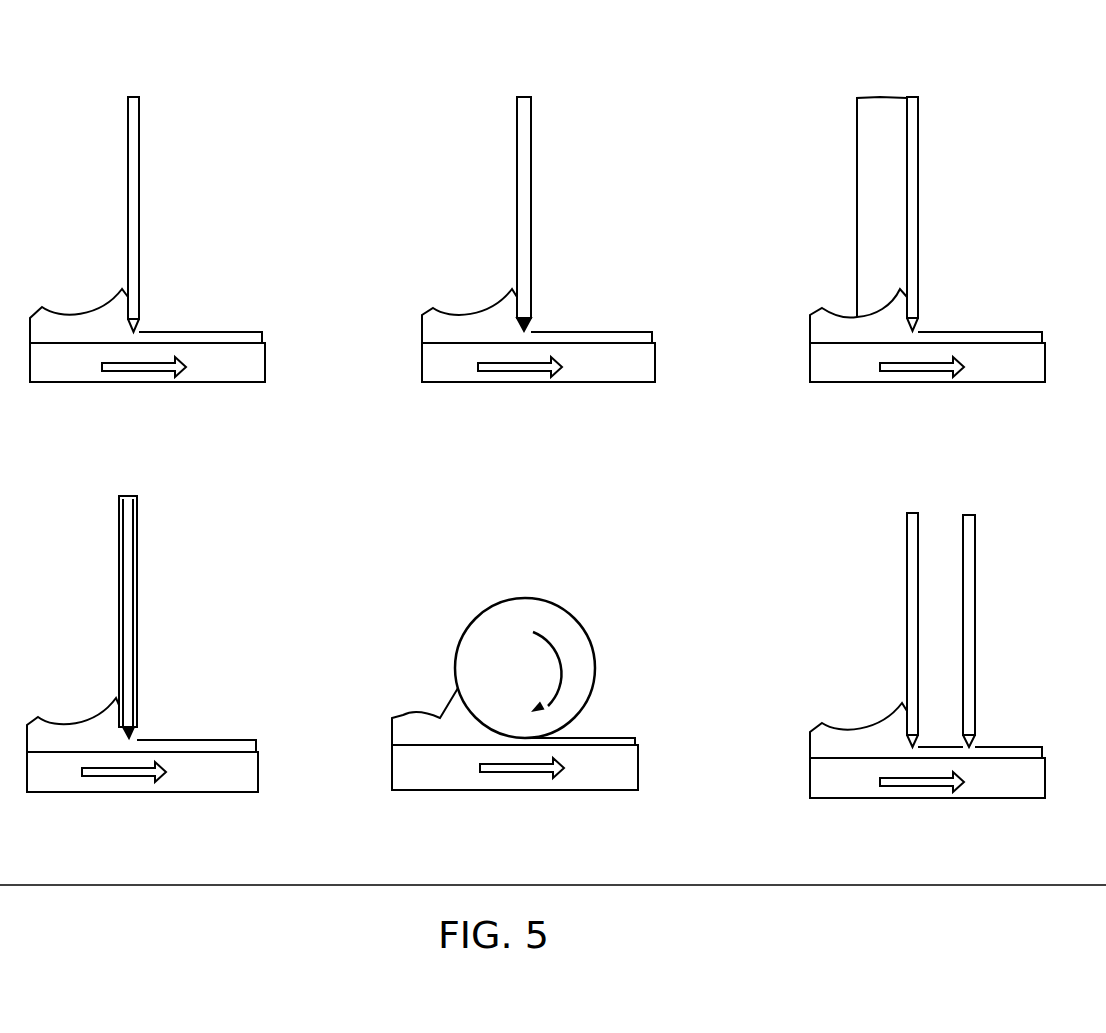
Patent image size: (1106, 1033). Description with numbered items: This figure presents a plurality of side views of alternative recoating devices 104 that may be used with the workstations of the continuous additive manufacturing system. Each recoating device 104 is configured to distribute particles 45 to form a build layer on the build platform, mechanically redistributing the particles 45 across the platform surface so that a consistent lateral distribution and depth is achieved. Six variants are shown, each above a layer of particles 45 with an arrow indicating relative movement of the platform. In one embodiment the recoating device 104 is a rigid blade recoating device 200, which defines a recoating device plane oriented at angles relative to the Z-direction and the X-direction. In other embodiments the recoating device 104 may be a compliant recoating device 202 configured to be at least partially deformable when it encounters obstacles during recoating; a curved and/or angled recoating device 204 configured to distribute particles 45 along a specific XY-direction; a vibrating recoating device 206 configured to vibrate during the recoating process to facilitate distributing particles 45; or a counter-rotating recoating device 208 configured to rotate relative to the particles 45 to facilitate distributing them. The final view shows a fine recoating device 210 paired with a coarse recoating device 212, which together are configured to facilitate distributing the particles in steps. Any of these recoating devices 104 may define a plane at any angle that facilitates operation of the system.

The recoating device 104 is at (186, 98).
The particles 45 is at (78, 316).
The rigid blade recoating device 200 is at (141, 174).
The compliant recoating device 202 is at (531, 175).
The curved and/or angled recoating device 204 is at (918, 177).
The vibrating recoating device 206 is at (137, 583).
The counter-rotating recoating device 208 is at (582, 645).
The fine recoating device 210 is at (906, 592).
The coarse recoating device 212 is at (977, 605).